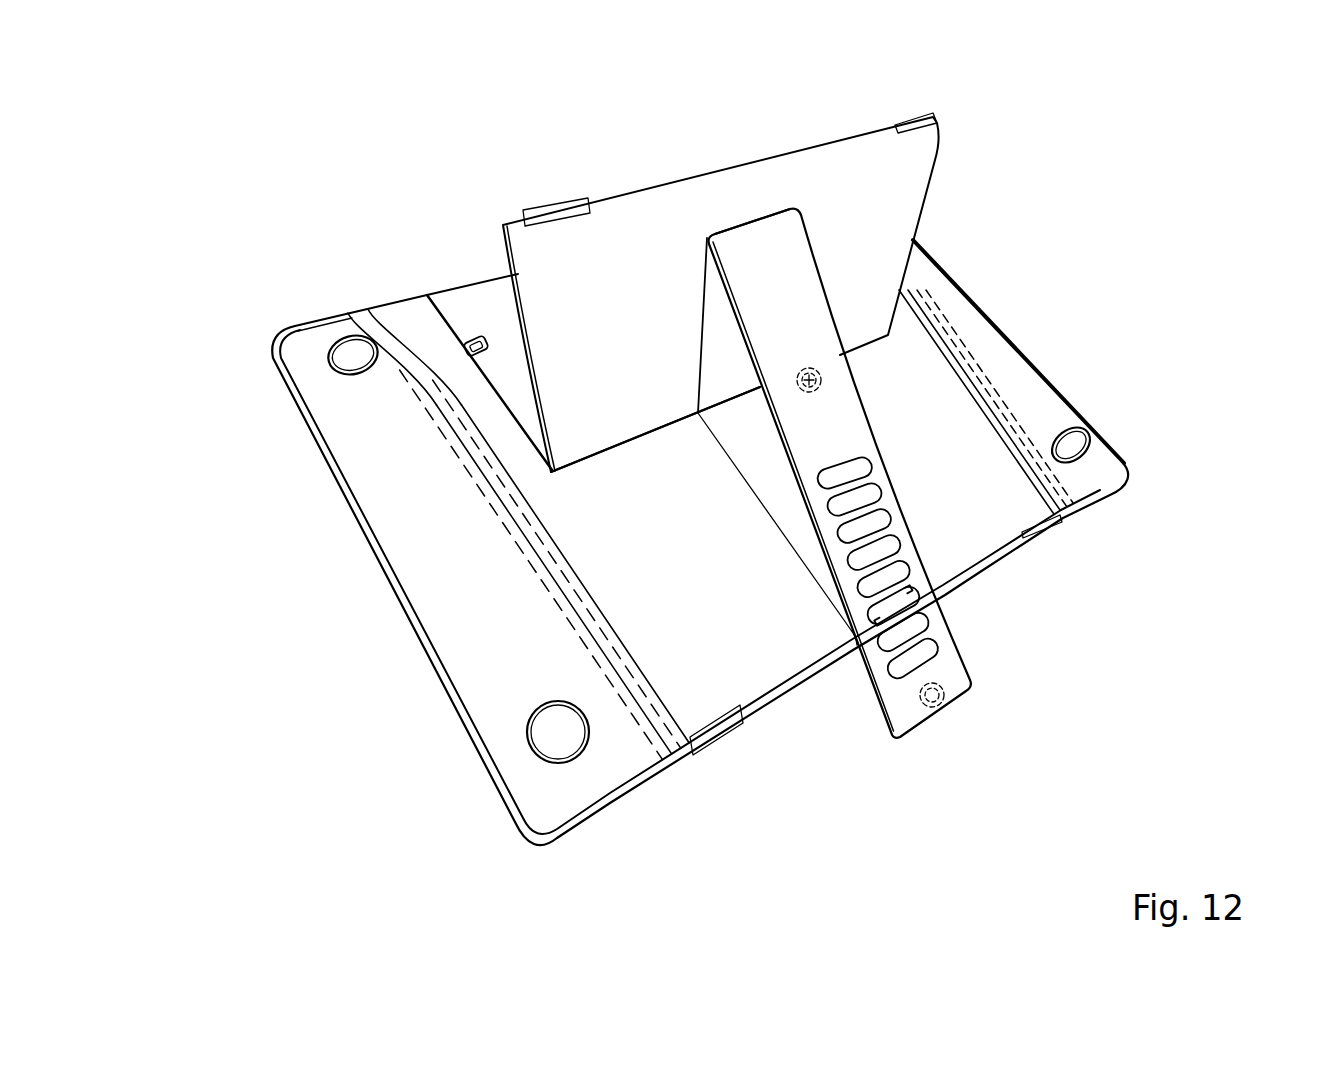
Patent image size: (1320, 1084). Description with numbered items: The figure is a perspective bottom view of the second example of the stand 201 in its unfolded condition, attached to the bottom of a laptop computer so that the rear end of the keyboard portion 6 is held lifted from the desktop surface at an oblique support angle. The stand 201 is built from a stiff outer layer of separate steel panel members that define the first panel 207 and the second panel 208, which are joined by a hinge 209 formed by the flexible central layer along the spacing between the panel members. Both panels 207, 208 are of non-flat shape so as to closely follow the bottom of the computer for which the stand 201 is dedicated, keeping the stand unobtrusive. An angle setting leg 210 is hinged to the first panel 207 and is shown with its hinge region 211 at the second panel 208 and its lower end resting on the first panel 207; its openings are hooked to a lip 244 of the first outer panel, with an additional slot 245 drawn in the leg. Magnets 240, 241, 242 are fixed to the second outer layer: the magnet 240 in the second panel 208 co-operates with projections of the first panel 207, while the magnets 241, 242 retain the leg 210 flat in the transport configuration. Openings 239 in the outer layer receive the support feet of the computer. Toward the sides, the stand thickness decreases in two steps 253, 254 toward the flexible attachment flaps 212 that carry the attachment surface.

The keyboard portion 6 is at (442, 693).
The stand 201 is at (410, 640).
The first panel 207 is at (719, 646).
The second panel 208 is at (597, 297).
The hinge 209 is at (622, 442).
The angle setting leg 210 is at (804, 439).
The hinge edge 211 is at (757, 218).
The flexible attachment flaps 212 is at (477, 646).
The openings 239 is at (326, 357).
The magnet 240 is at (468, 338).
The magnet 241 is at (965, 707).
The magnet 242 is at (823, 377).
The lip 244 is at (943, 657).
The engagement slot 245 is at (892, 613).
The step 253 is at (557, 543).
The step 254 is at (570, 598).